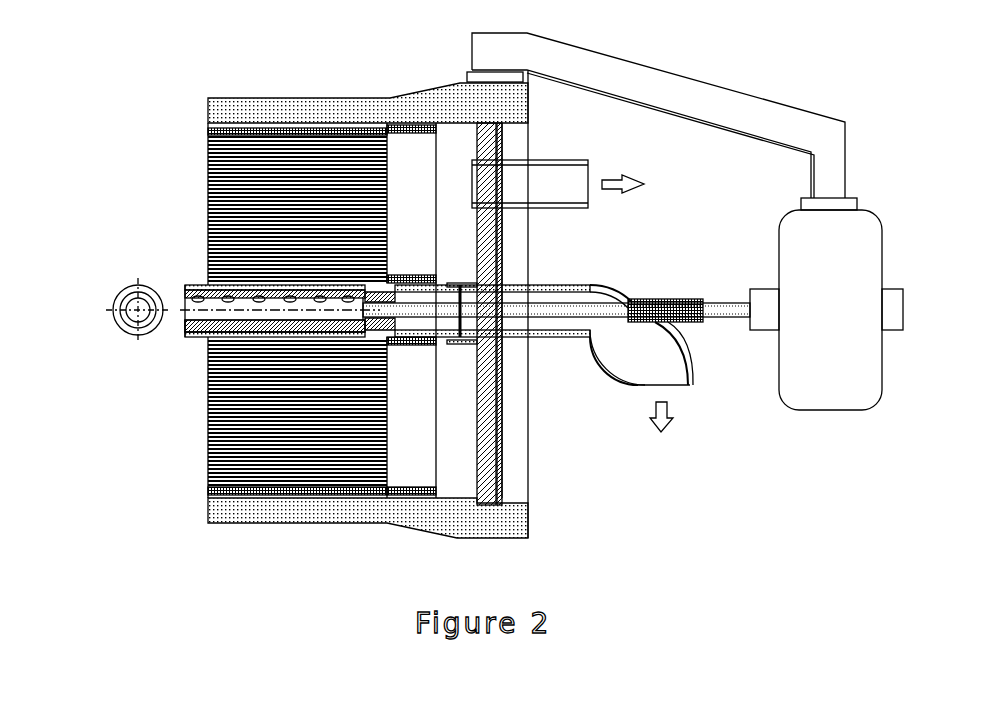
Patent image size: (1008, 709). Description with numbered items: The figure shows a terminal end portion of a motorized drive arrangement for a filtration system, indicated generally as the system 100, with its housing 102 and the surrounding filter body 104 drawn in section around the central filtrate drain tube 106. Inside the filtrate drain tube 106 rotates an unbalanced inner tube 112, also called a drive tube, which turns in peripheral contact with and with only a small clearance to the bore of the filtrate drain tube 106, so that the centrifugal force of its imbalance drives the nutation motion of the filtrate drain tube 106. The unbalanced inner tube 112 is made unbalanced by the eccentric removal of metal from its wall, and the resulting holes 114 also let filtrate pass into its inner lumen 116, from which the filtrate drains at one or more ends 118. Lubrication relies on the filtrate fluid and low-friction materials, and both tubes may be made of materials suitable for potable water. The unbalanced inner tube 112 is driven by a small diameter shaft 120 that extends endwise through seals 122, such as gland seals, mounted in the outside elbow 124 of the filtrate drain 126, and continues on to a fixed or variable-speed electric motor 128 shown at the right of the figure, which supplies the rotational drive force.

The system 100 is at (156, 82).
The housing 102 is at (207, 130).
The coil 104 is at (238, 217).
The filtrate drain tube 106 is at (200, 336).
The unbalanced inner tube 112 is at (183, 290).
The holes 114 is at (347, 285).
The inner lumen 116 is at (243, 315).
The ends 118 is at (397, 298).
The small diameter shaft 120 is at (730, 300).
The seals 122 is at (657, 299).
The outside elbow 124 is at (680, 333).
The filtrate drain 126 is at (660, 368).
The electric motor 128 is at (826, 350).